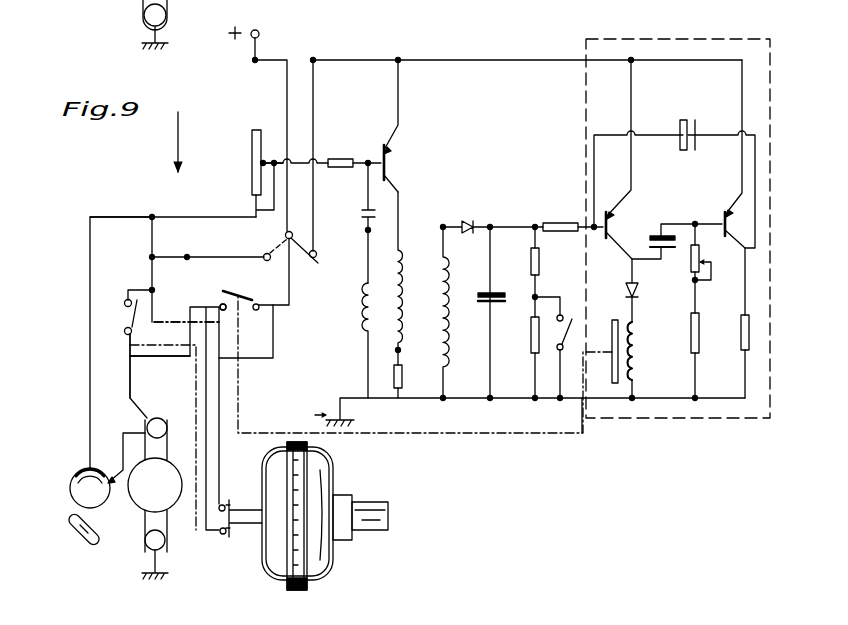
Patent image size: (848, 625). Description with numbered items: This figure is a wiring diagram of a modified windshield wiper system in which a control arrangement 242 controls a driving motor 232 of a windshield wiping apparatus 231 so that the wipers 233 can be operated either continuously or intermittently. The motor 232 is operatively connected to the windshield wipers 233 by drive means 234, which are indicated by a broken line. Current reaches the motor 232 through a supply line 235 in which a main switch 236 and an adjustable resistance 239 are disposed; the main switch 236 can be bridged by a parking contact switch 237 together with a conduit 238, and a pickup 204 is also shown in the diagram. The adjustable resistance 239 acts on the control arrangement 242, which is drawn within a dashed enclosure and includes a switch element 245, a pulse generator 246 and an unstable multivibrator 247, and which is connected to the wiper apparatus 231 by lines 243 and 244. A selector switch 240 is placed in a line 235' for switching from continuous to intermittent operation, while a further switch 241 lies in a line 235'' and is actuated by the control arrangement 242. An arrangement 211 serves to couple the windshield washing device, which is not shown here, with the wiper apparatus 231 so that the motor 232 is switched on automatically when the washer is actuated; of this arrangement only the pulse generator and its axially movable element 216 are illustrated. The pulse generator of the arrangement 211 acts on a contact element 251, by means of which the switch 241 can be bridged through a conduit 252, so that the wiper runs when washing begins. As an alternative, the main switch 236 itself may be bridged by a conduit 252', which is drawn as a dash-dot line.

The pickup device 204 is at (130, 24).
The arrangement 211 is at (364, 550).
The axially movable element 216 is at (248, 518).
The windshield wiping apparatus 231 is at (183, 130).
The driving motor 232 is at (175, 507).
The wipers 233 is at (83, 537).
The drive means 234 is at (153, 487).
The supply line 235 is at (85, 360).
The line 235' is at (116, 205).
The line 235'' is at (114, 367).
The main switch 236 is at (127, 318).
The parking contact switch 237 is at (80, 463).
The conduit 238 is at (90, 230).
The adjustable resistance 239 is at (253, 146).
The selector switch 240 is at (302, 260).
The switch 241 is at (243, 298).
The control arrangement 242 is at (535, 54).
The line 243 is at (335, 60).
The line 244 is at (282, 162).
The switch element 245 is at (403, 132).
The pulse generator 246 is at (432, 402).
The unstable multivibrator 247 is at (665, 420).
The contact element 251 is at (226, 505).
The conduit 252 is at (274, 331).
The conduit 252' is at (155, 237).